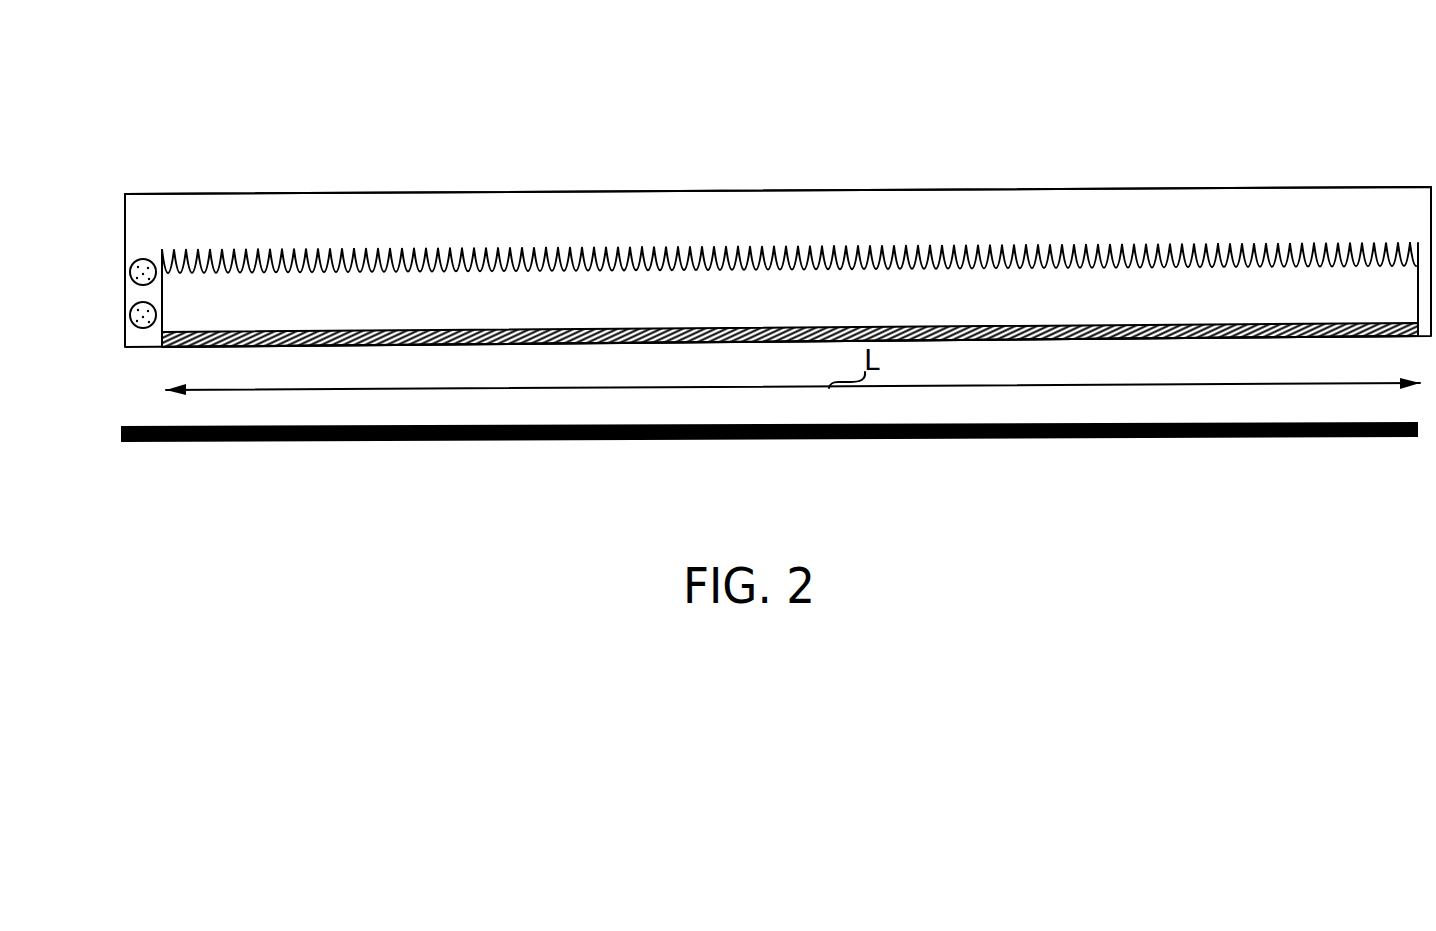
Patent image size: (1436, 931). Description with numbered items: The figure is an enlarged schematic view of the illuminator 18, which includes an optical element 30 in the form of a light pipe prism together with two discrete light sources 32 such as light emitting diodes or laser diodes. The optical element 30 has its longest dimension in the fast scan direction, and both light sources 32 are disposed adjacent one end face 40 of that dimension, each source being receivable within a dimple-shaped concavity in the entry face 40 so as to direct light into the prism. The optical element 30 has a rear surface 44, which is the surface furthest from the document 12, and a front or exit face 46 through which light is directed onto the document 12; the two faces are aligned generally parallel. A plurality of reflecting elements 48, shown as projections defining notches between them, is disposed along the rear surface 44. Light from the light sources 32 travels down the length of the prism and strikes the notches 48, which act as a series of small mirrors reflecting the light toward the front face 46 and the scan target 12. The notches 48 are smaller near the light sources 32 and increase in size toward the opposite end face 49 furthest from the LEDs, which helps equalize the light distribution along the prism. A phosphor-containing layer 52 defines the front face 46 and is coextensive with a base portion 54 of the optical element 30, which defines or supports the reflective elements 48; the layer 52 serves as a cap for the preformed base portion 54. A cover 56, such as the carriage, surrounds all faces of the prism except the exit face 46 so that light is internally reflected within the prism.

The document 12 is at (802, 440).
The illuminator 18 is at (335, 98).
The optical element 30 is at (617, 283).
The light source 32 is at (130, 270).
The end face 40 is at (163, 307).
The rear surface 44 is at (378, 248).
The front or exit face 46 is at (502, 356).
The reflecting elements 48 is at (995, 245).
The end face 49 is at (1418, 298).
The layer 52 is at (767, 342).
The base portion 54 is at (337, 283).
The cover 56 is at (708, 212).